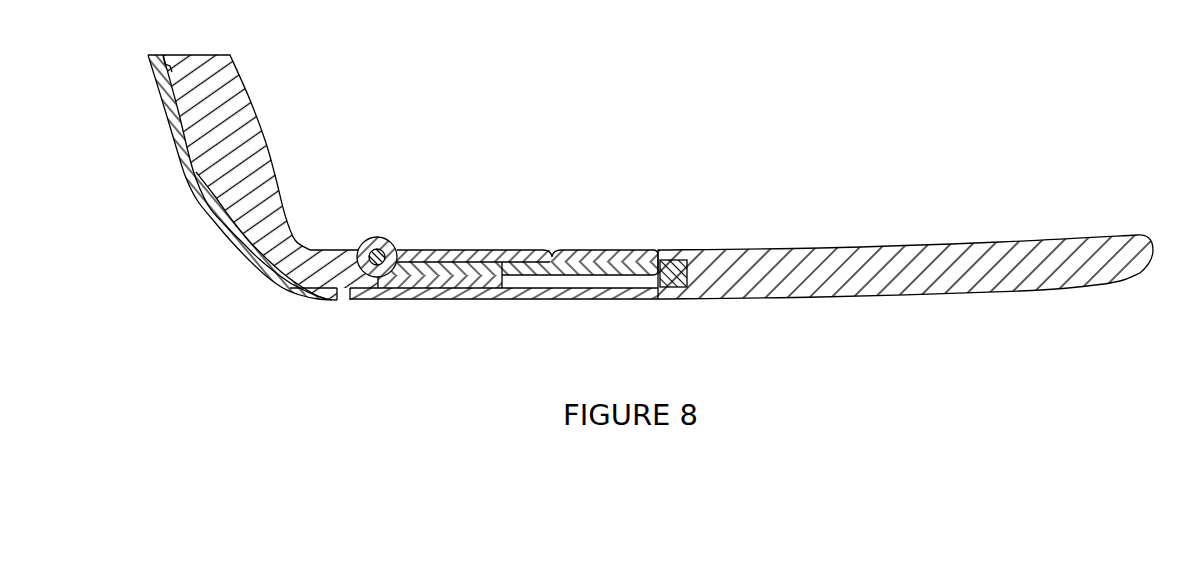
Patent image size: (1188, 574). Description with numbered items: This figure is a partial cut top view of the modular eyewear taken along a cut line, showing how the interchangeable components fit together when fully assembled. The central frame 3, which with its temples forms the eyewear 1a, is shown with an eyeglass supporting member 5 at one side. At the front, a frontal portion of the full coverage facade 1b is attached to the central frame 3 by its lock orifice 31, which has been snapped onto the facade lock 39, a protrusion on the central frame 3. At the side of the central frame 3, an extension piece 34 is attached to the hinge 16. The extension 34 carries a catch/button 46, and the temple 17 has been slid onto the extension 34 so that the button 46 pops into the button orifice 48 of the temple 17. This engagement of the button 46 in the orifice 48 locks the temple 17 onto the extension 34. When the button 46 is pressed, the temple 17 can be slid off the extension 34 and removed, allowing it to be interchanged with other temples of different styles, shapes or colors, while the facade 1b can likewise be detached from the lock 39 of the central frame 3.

The eyewear 1a is at (753, 222).
The full coverage facade 1b is at (198, 260).
The central frame 3 is at (287, 203).
The eyeglass supporting member 5 is at (248, 158).
The hinge 16 is at (391, 246).
The temple 17 is at (823, 290).
The lock orifice 31 is at (337, 293).
The extension piece 34 is at (450, 273).
The facade lock 39 is at (350, 300).
The catch/button 46 is at (607, 258).
The button orifice 48 is at (552, 257).